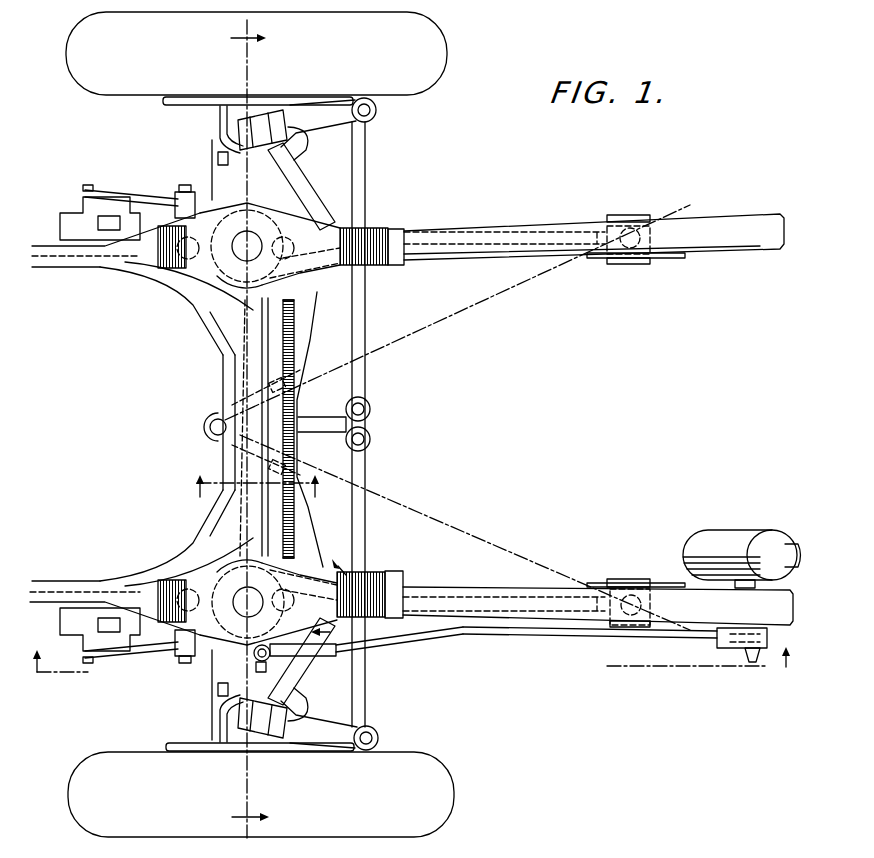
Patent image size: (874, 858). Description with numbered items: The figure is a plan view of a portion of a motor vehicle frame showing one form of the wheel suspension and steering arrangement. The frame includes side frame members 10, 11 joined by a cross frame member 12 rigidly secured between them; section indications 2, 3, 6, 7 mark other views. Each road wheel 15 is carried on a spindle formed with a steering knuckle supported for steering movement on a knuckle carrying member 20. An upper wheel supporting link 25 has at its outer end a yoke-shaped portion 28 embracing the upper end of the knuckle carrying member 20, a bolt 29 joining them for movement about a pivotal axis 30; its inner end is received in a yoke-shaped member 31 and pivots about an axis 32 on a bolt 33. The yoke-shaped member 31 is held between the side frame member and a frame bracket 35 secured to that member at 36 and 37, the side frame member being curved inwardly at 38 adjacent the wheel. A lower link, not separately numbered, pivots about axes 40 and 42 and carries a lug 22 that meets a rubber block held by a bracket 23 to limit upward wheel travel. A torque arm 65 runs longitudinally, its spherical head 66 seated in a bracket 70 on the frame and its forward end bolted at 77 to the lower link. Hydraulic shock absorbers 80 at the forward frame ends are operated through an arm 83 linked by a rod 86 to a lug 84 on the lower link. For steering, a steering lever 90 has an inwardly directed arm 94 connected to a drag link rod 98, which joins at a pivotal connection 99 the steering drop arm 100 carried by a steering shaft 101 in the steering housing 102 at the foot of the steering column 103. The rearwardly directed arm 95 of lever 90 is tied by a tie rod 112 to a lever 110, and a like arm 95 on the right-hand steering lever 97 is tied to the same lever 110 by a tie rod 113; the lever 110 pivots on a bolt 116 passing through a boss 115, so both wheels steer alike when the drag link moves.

The section line 2- 2 is at (413, 673).
The section line 3- 3 is at (249, 435).
The section line 6- 6 is at (255, 488).
The section line 7- 7 is at (331, 594).
The side frame member 10 is at (690, 220).
The side frame member 11 is at (573, 620).
The cross frame member 12 is at (237, 377).
The road wheel 15 is at (423, 78).
The knuckle carrying member 20 is at (258, 112).
The lug 22 is at (177, 280).
The bracket 23 is at (172, 303).
The upper wheel supporting link 25 is at (288, 178).
The yoke-shaped portion 28 is at (290, 154).
The bolt 29 is at (298, 129).
The pivotal axis 30 is at (242, 147).
The yoke-shaped member 31 is at (340, 212).
The axis 32 is at (352, 223).
The bolt 33 is at (316, 638).
The frame bracket 35 is at (338, 287).
The securing point 36 is at (400, 263).
The securing point 37 is at (112, 255).
The inwardly curved portion 38 is at (243, 305).
The pivotal axis 40 is at (222, 163).
The pivotal axis 42 is at (316, 372).
The torque arm 65 is at (493, 228).
The spherical head 66 is at (631, 215).
The bracket 70 is at (638, 264).
The bolt 77 is at (276, 270).
The shock absorber 80 is at (87, 207).
The arm 83 is at (137, 198).
The lug 84 is at (237, 250).
The rod 86 is at (195, 195).
The steering lever 90 is at (258, 646).
The inwardly directed arm 94 is at (256, 667).
The rearwardly directed arm 95 is at (323, 115).
The steering lever 97 is at (230, 128).
The rod 98 is at (405, 640).
The pivotal connection 99 is at (768, 641).
The steering drop arm 100 is at (743, 657).
The steering shaft 101 is at (733, 583).
The steering housing 102 is at (730, 532).
The steering column 103 is at (781, 548).
The lever 110 is at (331, 415).
The tie rod 112 is at (367, 476).
The tie rod 113 is at (366, 198).
The boss 115 is at (212, 431).
The bolt 116 is at (214, 420).